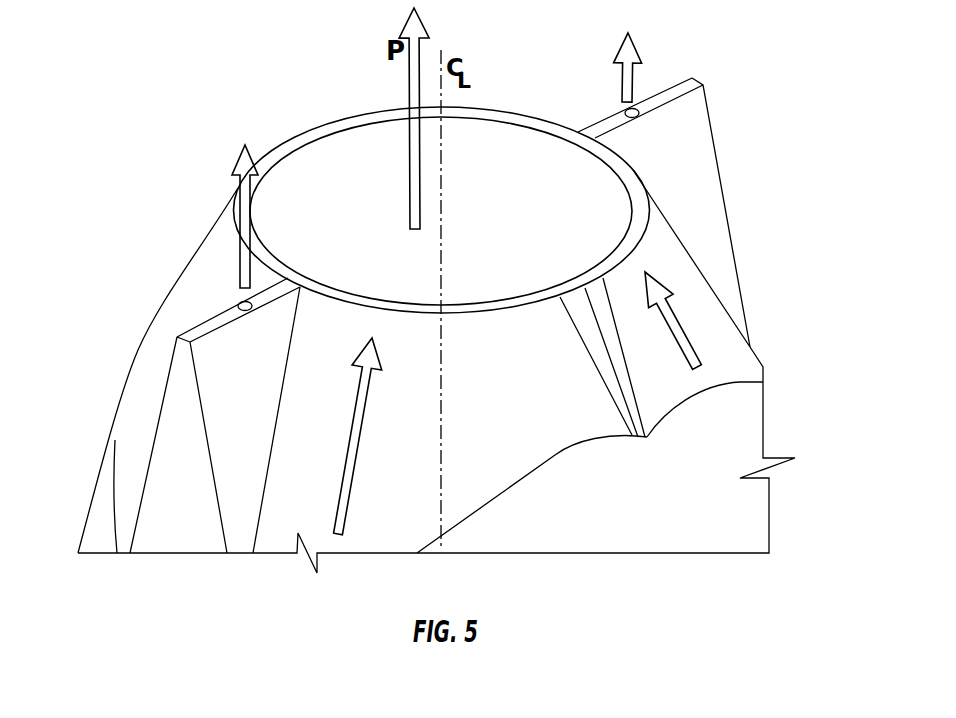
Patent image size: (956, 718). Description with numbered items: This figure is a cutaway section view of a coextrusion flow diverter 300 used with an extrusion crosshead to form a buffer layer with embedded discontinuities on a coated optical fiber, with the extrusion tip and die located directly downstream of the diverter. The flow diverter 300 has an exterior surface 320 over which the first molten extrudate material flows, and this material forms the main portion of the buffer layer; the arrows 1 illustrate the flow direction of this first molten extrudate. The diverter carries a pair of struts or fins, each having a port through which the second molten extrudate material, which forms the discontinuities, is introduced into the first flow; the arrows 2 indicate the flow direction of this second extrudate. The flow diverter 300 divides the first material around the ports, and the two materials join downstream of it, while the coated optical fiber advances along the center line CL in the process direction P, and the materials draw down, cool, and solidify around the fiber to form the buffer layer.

The coextrusion flow diverter 300 is at (105, 401).
The exterior surface 320 is at (212, 245).
The arrows 1 is at (518, 403).
The arrows 2 is at (433, 159).